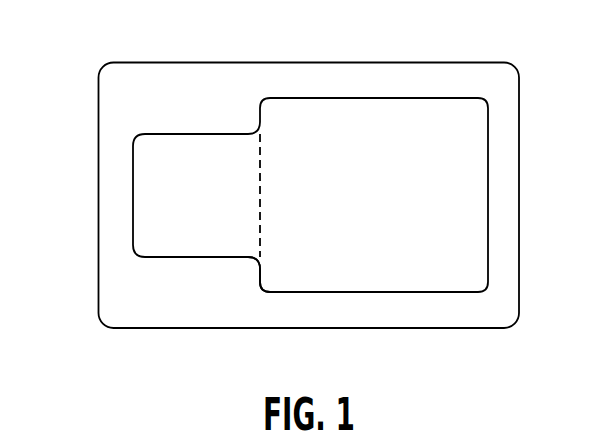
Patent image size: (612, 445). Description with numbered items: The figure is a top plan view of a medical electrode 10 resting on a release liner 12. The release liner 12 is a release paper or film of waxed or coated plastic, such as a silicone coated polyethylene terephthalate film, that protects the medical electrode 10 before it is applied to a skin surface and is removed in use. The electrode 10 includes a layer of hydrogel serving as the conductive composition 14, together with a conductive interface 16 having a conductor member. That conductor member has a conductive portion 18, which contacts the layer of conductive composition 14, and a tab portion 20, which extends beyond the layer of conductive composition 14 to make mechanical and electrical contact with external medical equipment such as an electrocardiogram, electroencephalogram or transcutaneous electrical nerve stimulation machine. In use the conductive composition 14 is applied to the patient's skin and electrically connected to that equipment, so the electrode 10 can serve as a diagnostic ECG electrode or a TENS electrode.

The medical electrode 10 is at (308, 201).
The release liner 12 is at (509, 111).
The conductive composition 14 is at (258, 218).
The conductive interface 16 is at (463, 210).
The conductive portion 18 is at (268, 283).
The tab portion 20 is at (148, 185).